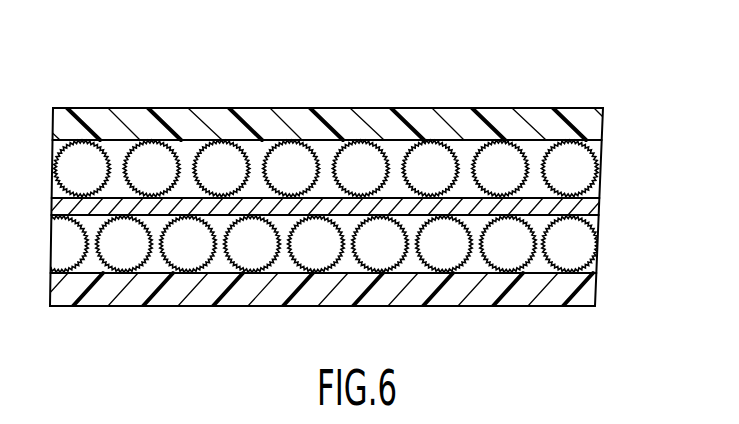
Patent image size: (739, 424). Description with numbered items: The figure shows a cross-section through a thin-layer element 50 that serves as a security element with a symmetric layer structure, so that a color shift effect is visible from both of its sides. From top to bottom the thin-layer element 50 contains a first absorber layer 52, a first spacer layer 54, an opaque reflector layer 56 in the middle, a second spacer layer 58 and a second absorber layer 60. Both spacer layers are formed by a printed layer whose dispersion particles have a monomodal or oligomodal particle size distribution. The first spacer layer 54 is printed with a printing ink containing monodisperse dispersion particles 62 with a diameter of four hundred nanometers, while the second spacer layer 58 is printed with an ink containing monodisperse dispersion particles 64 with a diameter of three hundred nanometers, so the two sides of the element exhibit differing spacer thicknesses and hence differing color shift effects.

The thin-layer element 50 is at (98, 97).
The first absorber layer 52 is at (580, 128).
The first spacer layer 54 is at (596, 165).
The opaque reflector layer 56 is at (592, 209).
The second spacer layer 58 is at (596, 248).
The second absorber layer 60 is at (585, 292).
The monodisperse dispersion particles 62 is at (228, 168).
The monodisperse dispersion particles 64 is at (258, 248).